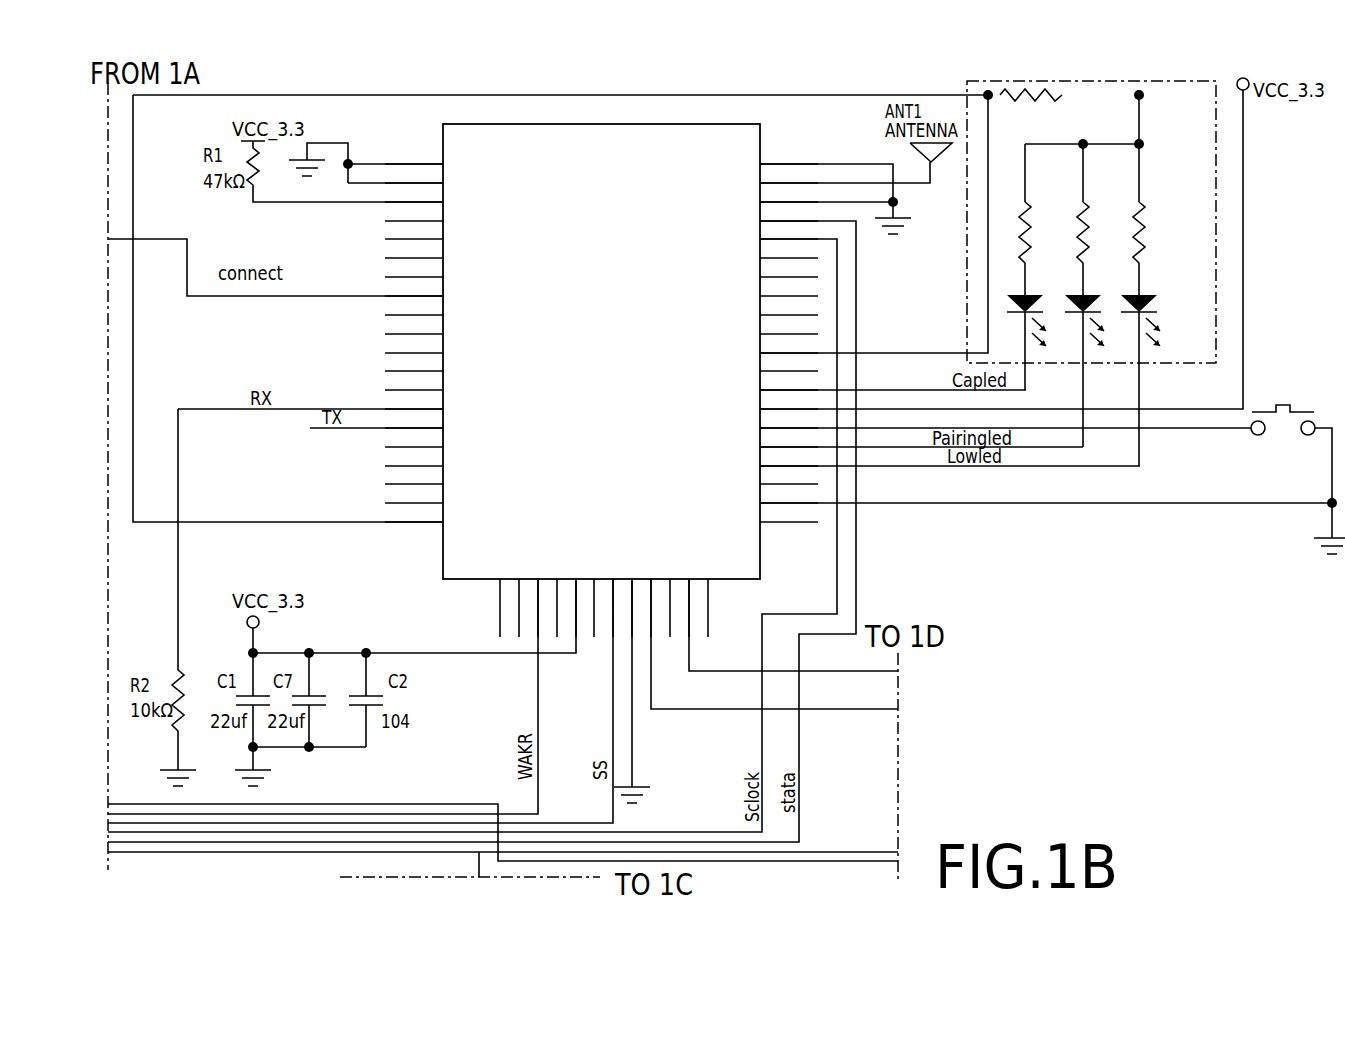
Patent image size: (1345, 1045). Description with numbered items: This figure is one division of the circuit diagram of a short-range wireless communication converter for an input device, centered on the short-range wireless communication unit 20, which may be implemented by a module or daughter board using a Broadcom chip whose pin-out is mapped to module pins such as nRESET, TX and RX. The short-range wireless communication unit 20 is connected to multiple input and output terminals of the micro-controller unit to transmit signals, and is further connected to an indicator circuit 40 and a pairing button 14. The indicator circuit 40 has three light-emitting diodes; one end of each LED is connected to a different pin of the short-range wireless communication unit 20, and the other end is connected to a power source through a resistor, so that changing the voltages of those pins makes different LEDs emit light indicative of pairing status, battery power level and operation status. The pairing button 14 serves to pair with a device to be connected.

The short-range wireless communication unit 20 is at (761, 129).
The indicator circuit 40 is at (967, 243).
The pairing button 14 is at (1276, 455).